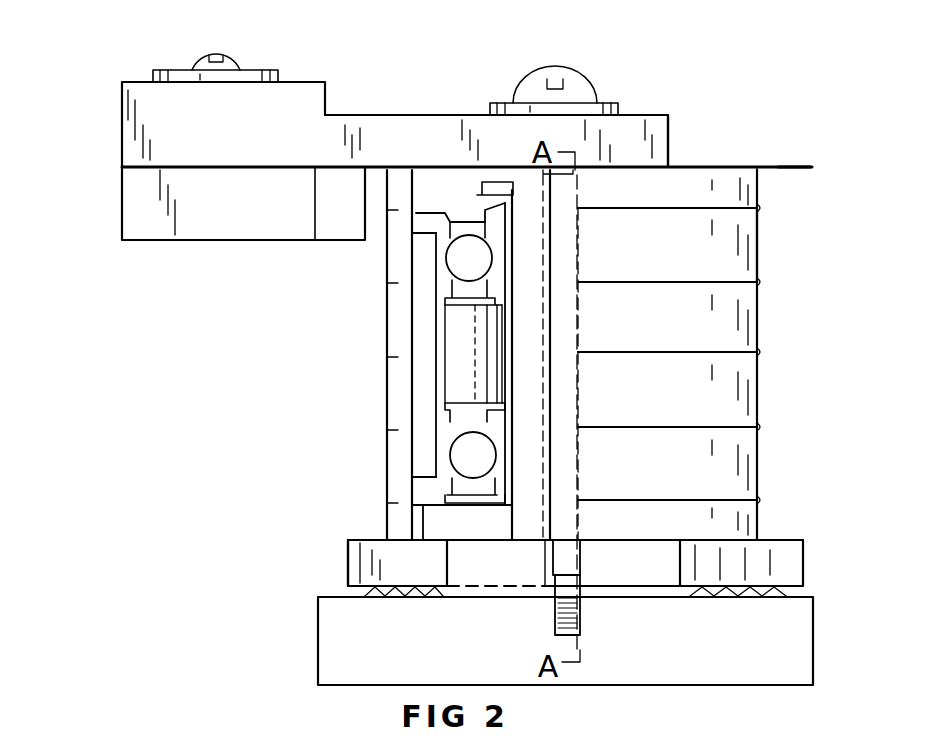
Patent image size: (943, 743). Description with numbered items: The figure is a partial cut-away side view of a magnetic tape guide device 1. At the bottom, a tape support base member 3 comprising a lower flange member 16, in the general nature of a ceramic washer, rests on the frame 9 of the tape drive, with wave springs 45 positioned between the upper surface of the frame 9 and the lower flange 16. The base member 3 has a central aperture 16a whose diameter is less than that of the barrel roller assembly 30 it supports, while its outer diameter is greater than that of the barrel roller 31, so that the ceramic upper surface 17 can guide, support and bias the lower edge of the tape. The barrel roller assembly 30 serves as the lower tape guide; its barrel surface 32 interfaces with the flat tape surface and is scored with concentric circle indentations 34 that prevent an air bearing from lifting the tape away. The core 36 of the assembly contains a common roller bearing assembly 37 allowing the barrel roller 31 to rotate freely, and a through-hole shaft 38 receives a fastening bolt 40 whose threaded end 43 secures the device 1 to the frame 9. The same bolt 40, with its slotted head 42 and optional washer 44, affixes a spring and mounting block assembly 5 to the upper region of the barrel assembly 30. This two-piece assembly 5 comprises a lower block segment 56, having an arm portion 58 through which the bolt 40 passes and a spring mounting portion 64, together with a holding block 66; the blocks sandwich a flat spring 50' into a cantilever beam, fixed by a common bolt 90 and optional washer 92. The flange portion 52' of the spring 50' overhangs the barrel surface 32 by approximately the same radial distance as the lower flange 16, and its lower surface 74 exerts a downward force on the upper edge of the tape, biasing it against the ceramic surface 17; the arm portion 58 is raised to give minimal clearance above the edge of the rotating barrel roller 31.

The tape guide device 1 is at (790, 76).
The tape support base member 3 is at (325, 570).
The spring and mounting block assembly 5 is at (120, 222).
The frame 9 is at (643, 677).
The lower flange member 16 is at (806, 562).
The central aperture 16a is at (482, 596).
The ceramic upper surface 17 is at (785, 525).
The barrel roller assembly 30 is at (785, 338).
The barrel roller 31 is at (400, 372).
The barrel surface 32 is at (640, 402).
The concentric circle indentations 34 is at (762, 208).
The core 36 is at (462, 205).
The roller bearing assembly 37 is at (462, 375).
The through-hole shaft 38 is at (540, 558).
The fastening bolt 40 is at (561, 302).
The slotted head 42 is at (575, 92).
The threaded end 43 is at (582, 608).
The washer 44 is at (620, 106).
The wave springs 45 is at (392, 597).
The flat spring 50' is at (466, 142).
The flange portion 52' is at (822, 145).
The lower block segment 56 is at (377, 128).
The arm portion 58 is at (657, 135).
The spring mounting portion 64 is at (257, 225).
The holding block 66 is at (128, 112).
The lower surface 74 is at (786, 180).
The bolt 90 is at (232, 62).
The washer 92 is at (275, 72).